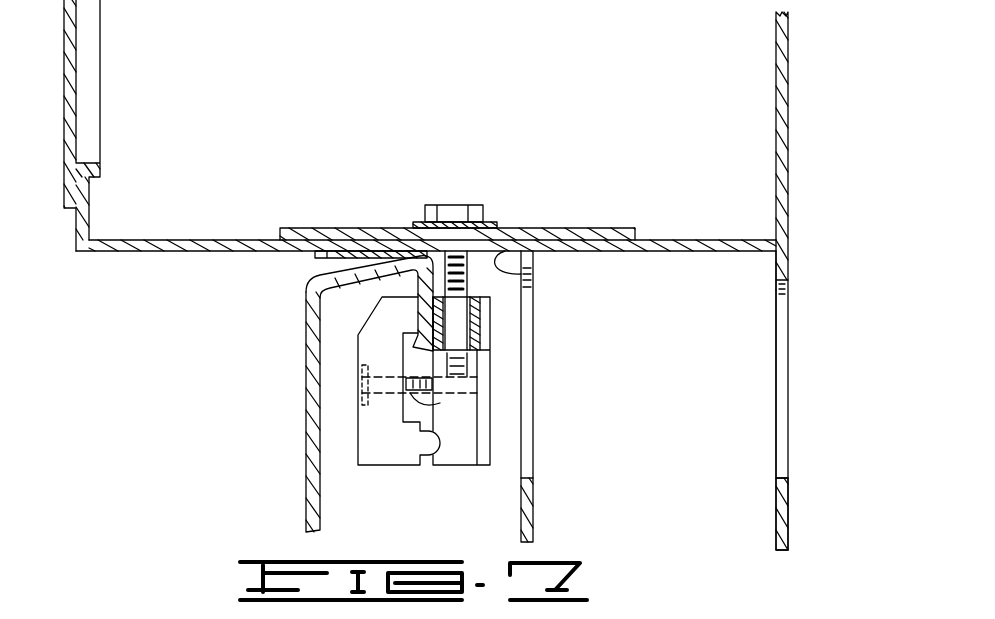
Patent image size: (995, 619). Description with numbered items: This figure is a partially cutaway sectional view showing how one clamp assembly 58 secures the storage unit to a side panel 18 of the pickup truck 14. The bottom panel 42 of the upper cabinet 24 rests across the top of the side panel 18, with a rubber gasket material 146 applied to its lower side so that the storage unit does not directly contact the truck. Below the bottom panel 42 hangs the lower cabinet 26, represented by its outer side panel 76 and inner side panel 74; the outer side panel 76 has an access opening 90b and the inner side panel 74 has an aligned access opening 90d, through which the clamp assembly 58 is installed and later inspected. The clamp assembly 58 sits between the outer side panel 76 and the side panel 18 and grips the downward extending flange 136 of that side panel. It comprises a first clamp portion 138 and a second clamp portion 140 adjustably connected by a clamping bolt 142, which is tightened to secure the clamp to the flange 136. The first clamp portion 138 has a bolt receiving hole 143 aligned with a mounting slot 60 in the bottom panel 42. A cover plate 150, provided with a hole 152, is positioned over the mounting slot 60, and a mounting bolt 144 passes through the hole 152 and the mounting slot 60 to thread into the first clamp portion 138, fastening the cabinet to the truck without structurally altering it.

The pickup truck 14 is at (308, 513).
The side panel 18 is at (308, 473).
The upper cabinet 24 is at (790, 58).
The lower cabinet 26 is at (790, 272).
The bottom panel 42 is at (663, 240).
The clamp assembly 58 is at (392, 466).
The mounting slot 60 is at (523, 272).
The inner side panel 74 is at (792, 537).
The outer side panel 76 is at (533, 512).
The access opening 90b is at (527, 477).
The access opening 90d is at (790, 472).
The downward extending flange 136 is at (318, 305).
The first clamp portion 138 is at (452, 467).
The second clamp portion 140 is at (372, 443).
The clamping bolt 142 is at (478, 403).
The bolt receiving hole 143 is at (463, 323).
The mounting bolt 144 is at (472, 205).
The rubber gasket material 146 is at (320, 253).
The cover plate 150 is at (302, 229).
The hole 152 is at (440, 236).